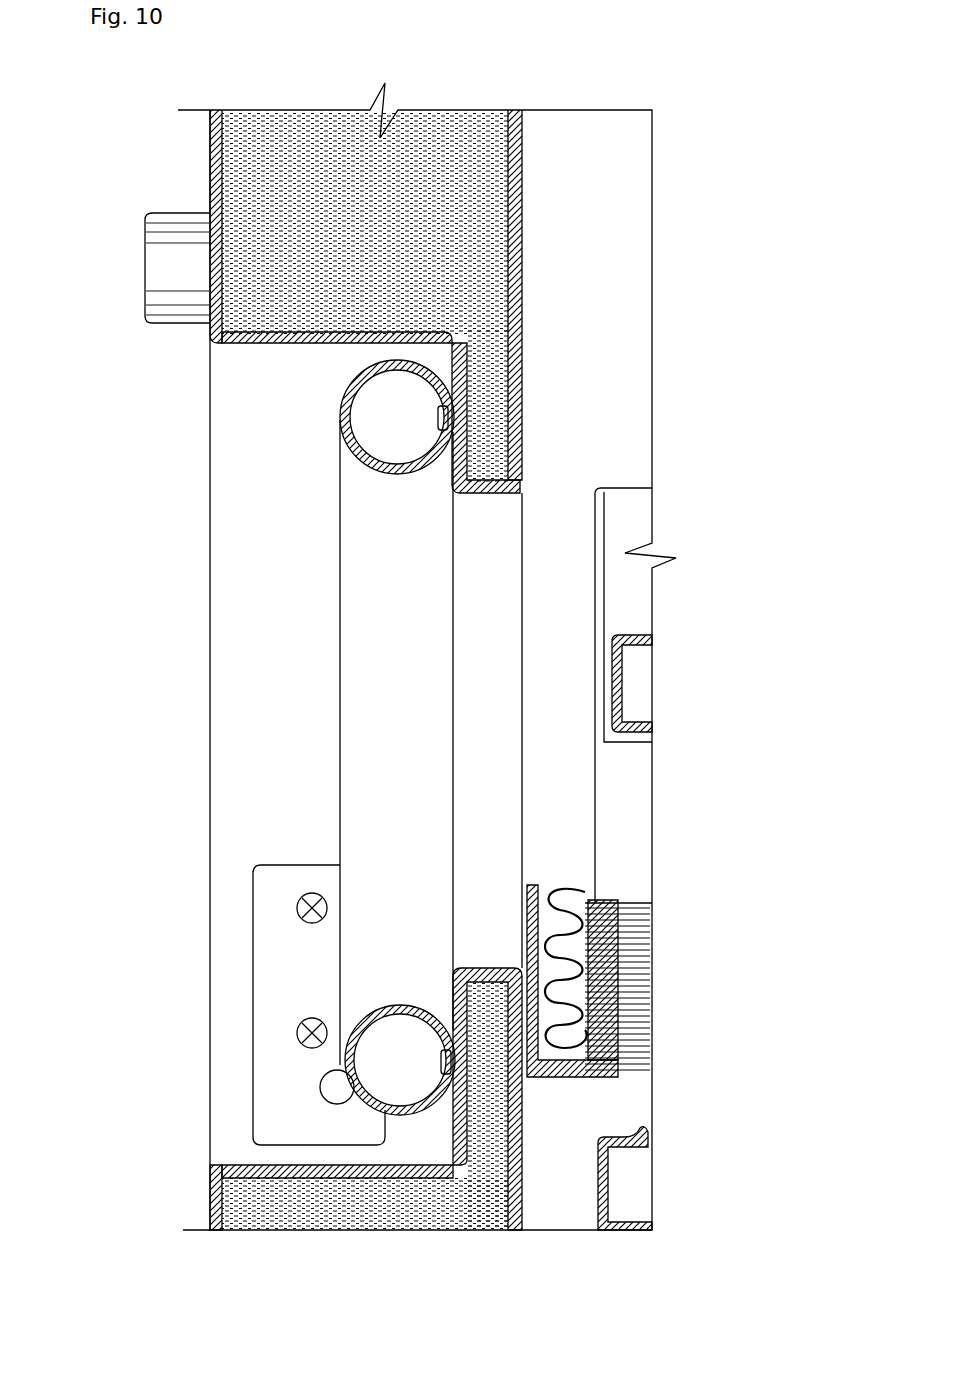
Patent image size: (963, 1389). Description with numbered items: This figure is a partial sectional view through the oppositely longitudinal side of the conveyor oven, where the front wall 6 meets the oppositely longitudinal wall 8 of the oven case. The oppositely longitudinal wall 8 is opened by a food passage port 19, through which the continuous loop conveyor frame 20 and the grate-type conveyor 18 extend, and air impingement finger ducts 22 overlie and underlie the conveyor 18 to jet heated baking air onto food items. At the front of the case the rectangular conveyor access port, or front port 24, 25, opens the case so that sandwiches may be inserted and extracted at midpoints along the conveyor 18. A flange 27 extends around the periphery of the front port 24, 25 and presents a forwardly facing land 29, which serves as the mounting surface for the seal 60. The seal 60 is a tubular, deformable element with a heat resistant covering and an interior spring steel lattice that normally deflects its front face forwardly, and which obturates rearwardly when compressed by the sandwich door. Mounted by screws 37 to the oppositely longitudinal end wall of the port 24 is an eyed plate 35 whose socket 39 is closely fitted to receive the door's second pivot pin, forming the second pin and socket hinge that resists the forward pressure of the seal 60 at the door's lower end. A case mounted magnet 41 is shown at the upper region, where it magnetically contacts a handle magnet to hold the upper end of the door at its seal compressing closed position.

The front wall 6 is at (300, 133).
The oppositely longitudinal wall 8 is at (605, 241).
The case mounted magnet 41 is at (165, 236).
The flange 27 is at (490, 410).
The front port 25 is at (498, 530).
The front port 24 is at (228, 491).
The land 29 is at (452, 462).
The air impingement finger duct 22 is at (640, 680).
The food passage port 19 is at (635, 782).
The seal 60 is at (362, 810).
The conveyor 18 is at (575, 888).
The screws 37 is at (300, 907).
The socket 39 is at (330, 1085).
The conveyor frame 20 is at (570, 1076).
The eyed plate 35 is at (290, 1100).